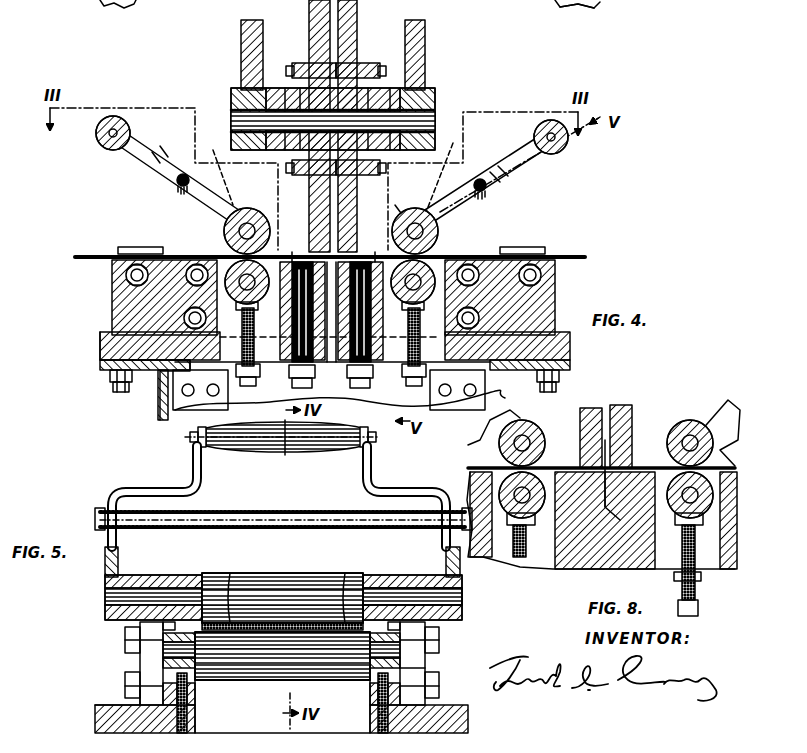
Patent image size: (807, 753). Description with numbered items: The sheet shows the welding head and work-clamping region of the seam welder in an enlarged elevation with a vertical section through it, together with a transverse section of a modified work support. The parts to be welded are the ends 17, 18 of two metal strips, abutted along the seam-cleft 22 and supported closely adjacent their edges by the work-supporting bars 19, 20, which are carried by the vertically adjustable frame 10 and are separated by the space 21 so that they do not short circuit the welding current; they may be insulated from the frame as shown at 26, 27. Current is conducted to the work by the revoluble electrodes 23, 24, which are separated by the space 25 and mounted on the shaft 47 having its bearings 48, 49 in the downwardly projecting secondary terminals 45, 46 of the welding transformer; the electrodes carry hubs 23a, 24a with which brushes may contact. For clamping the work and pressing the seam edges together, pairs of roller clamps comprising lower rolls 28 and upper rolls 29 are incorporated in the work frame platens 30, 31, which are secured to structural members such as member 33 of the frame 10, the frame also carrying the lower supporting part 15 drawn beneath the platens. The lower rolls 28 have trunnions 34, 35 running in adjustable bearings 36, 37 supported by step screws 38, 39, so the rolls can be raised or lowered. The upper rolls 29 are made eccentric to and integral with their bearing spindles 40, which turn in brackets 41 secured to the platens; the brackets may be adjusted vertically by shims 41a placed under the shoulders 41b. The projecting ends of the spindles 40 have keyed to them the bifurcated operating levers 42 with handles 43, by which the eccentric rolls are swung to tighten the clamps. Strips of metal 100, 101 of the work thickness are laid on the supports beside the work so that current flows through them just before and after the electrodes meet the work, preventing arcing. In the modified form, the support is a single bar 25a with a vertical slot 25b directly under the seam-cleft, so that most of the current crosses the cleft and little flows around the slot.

In FIG. 4, the vertically adjustable frame 10 is at (100, 318).
In FIG. 5, the vertically adjustable frame 10 is at (90, 676).
In FIG. 4, the support bracket 15 is at (586, 5).
In FIG. 4, the end of metal strip 17 is at (85, 254).
In FIG. 8, the end of metal strip 17 is at (478, 466).
In FIG. 4, the end of metal strip 18 is at (583, 254).
In FIG. 5, the end of metal strip 18 is at (264, 580).
In FIG. 8, the end of metal strip 18 is at (735, 405).
In FIG. 4, the work-supporting bar 19 is at (292, 258).
In FIG. 4, the work-supporting bar 20 is at (375, 258).
In FIG. 4, the space between work-supporting bars 21 is at (331, 325).
In FIG. 4, the seam-cleft 22 is at (337, 247).
In FIG. 8, the seam-cleft 22 is at (606, 441).
In FIG. 4, the electrode 23 is at (313, 200).
In FIG. 8, the electrode 23 is at (582, 416).
In FIG. 4, the hub of electrode 23a is at (302, 63).
In FIG. 4, the electrode 24 is at (358, 198).
In FIG. 8, the electrode 24 is at (632, 416).
In FIG. 4, the hub of electrode 24a is at (366, 63).
In FIG. 4, the space between electrodes 25 is at (403, 203).
In FIG. 8, the space between electrodes 25 is at (614, 408).
In FIG. 8, the single work-support bar 25a is at (588, 572).
In FIG. 8, the slot 25b is at (631, 502).
In FIG. 4, the insulation 26 is at (258, 322).
In FIG. 4, the insulation 27 is at (408, 330).
In FIG. 4, the lower roll of roller clamp 28 is at (228, 264).
In FIG. 5, the lower roll of roller clamp 28 is at (282, 656).
In FIG. 8, the lower roll of roller clamp 28 is at (525, 514).
In FIG. 4, the upper roll of roller clamp 29 is at (224, 224).
In FIG. 5, the upper roll of roller clamp 29 is at (282, 598).
In FIG. 8, the upper roll of roller clamp 29 is at (542, 438).
In FIG. 4, the work frame platen 30 is at (112, 287).
In FIG. 4, the work frame platen 31 is at (555, 290).
In FIG. 5, the work frame platen 31 is at (95, 720).
In FIG. 4, the structural member of frame 33 is at (342, 392).
In FIG. 5, the trunnion 34 is at (197, 652).
In FIG. 5, the trunnion 35 is at (372, 650).
In FIG. 5, the adjustable bearing 36 is at (163, 665).
In FIG. 4, the adjustable bearing 37 is at (167, 296).
In FIG. 5, the adjustable bearing 37 is at (410, 668).
In FIG. 5, the step screw 38 is at (140, 688).
In FIG. 4, the step screw 39 is at (232, 400).
In FIG. 5, the step screw 39 is at (412, 690).
In FIG. 8, the step screw 39 is at (698, 592).
In FIG. 4, the bearing spindle 40 is at (214, 174).
In FIG. 5, the bearing spindle 40 is at (176, 597).
In FIG. 4, the bracket 41 is at (160, 246).
In FIG. 5, the bracket 41 is at (150, 645).
In FIG. 5, the shim 41a is at (165, 628).
In FIG. 4, the shoulder of bracket 41b is at (525, 246).
In FIG. 5, the shoulder of bracket 41b is at (152, 600).
In FIG. 4, the bifurcated operating lever 42 is at (175, 155).
In FIG. 5, the bifurcated operating lever 42 is at (183, 484).
In FIG. 4, the handle 43 is at (113, 116).
In FIG. 5, the handle 43 is at (272, 454).
In FIG. 4, the secondary terminal 45 is at (245, 34).
In FIG. 4, the secondary terminal 46 is at (424, 34).
In FIG. 4, the shaft 47 is at (436, 122).
In FIG. 4, the bearing 48 is at (240, 92).
In FIG. 4, the bearing 49 is at (432, 92).
In FIG. 5, the metal strip 100 is at (232, 572).
In FIG. 5, the metal strip 101 is at (346, 572).